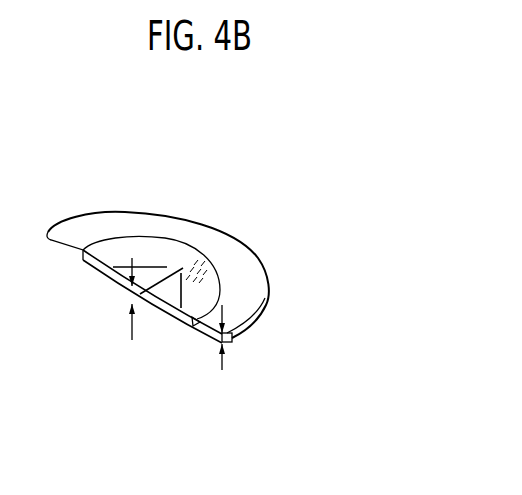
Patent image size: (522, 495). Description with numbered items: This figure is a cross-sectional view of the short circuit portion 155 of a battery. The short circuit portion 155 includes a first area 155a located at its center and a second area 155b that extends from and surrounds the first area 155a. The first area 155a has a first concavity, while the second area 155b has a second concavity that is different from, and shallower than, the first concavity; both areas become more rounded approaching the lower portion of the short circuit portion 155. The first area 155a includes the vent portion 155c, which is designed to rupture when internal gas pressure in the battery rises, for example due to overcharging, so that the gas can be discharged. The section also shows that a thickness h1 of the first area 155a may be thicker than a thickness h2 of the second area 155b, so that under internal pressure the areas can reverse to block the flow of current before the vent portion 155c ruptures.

The short circuit portion 155 is at (240, 205).
The first area 155a is at (162, 313).
The second area 155b is at (256, 268).
The vent portion 155c is at (150, 283).
The thickness of the first area h1 is at (130, 297).
The thickness of the second area h2 is at (199, 340).